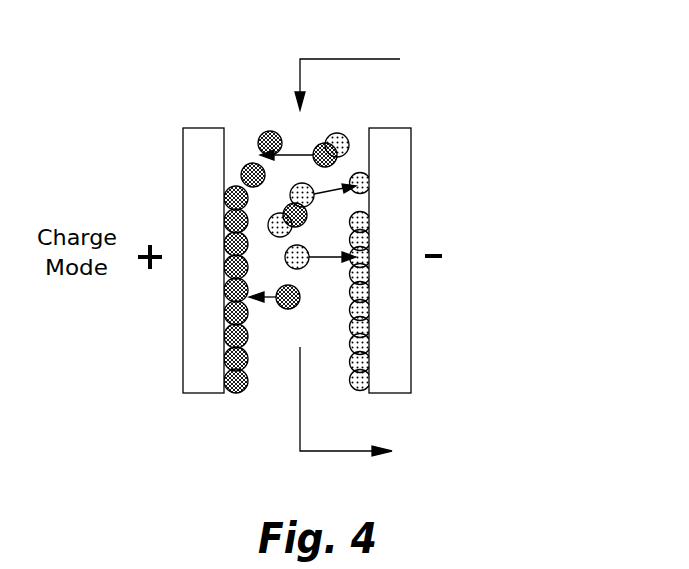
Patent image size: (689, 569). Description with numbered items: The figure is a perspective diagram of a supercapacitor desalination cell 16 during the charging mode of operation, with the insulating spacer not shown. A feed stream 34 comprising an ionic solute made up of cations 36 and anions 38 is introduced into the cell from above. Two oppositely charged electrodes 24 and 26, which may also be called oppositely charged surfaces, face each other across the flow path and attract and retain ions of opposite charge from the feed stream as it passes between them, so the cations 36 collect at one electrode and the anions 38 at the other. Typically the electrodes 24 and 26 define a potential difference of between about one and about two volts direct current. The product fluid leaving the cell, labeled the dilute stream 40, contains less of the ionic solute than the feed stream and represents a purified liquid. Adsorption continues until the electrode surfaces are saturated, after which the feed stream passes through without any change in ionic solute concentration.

The supercapacitor desalination cell 16 is at (608, 112).
The electrode 24 is at (411, 173).
The electrode 26 is at (183, 313).
The feed stream 34 is at (300, 70).
The cations 36 is at (360, 393).
The anions 38 is at (230, 393).
The dilute stream 40 is at (315, 452).